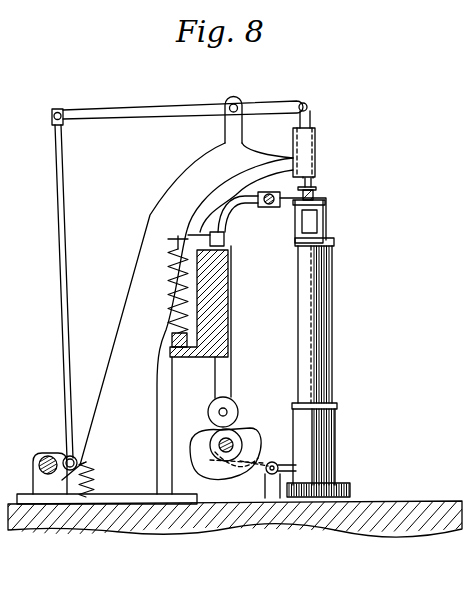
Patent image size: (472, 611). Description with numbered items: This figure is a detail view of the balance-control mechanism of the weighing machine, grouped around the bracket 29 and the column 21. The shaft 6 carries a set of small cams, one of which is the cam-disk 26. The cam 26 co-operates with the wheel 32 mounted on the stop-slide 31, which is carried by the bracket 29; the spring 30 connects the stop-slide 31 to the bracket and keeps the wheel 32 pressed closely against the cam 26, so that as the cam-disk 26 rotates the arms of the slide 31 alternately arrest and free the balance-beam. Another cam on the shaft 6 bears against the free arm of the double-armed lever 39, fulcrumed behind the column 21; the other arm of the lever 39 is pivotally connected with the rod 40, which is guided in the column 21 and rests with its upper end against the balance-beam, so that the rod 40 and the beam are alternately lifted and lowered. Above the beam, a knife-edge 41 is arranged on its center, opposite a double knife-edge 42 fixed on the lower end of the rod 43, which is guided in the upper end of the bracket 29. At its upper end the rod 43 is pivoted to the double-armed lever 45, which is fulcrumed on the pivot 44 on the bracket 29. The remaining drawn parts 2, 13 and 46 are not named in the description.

The cylinder 2 is at (333, 362).
The shaft 6 is at (232, 438).
The base 13 is at (207, 527).
The column 21 is at (255, 431).
The cam 26 is at (238, 454).
The bracket 29 is at (140, 283).
The spring 30 is at (177, 293).
The stop-slide 31 is at (243, 204).
The wheel 32 is at (213, 411).
The double-armed lever 39 is at (262, 470).
The rod 40 is at (333, 305).
The knife-edge 41 is at (317, 190).
The double knife-edge 42 is at (313, 173).
The rod 43 is at (316, 122).
The pivot 44 is at (236, 100).
The double-armed lever 45 is at (147, 115).
The rod 46 is at (60, 303).